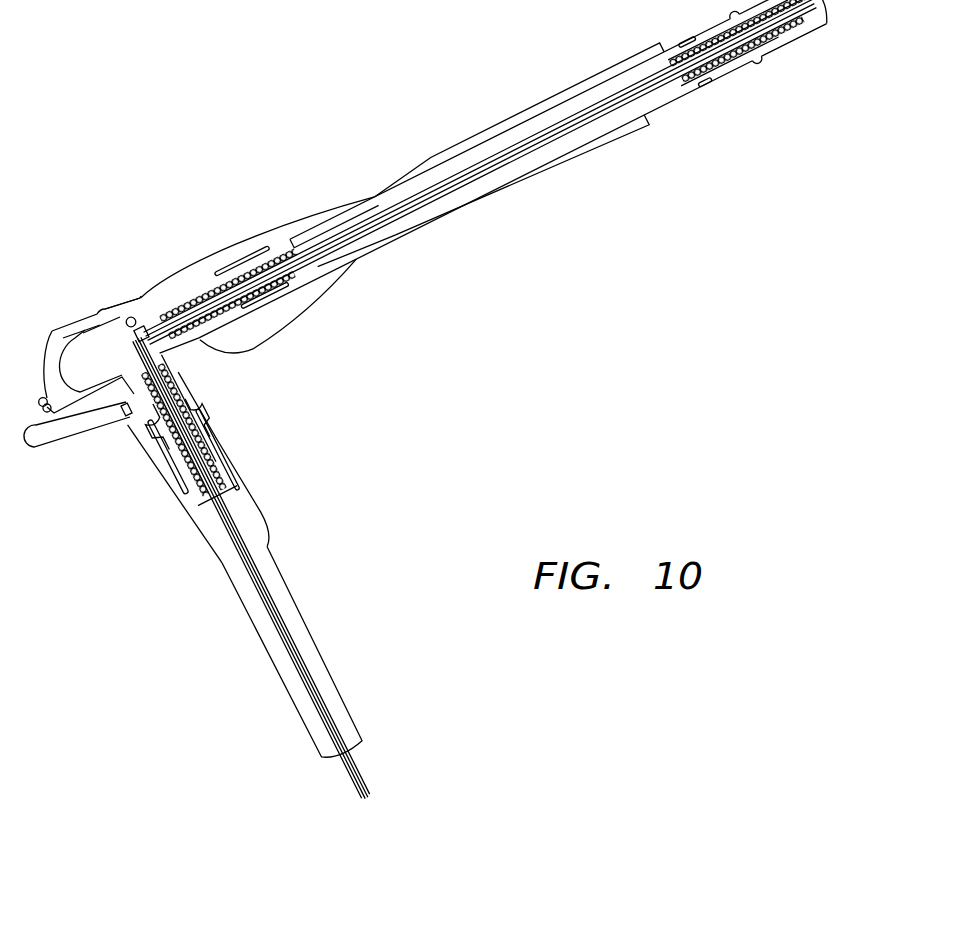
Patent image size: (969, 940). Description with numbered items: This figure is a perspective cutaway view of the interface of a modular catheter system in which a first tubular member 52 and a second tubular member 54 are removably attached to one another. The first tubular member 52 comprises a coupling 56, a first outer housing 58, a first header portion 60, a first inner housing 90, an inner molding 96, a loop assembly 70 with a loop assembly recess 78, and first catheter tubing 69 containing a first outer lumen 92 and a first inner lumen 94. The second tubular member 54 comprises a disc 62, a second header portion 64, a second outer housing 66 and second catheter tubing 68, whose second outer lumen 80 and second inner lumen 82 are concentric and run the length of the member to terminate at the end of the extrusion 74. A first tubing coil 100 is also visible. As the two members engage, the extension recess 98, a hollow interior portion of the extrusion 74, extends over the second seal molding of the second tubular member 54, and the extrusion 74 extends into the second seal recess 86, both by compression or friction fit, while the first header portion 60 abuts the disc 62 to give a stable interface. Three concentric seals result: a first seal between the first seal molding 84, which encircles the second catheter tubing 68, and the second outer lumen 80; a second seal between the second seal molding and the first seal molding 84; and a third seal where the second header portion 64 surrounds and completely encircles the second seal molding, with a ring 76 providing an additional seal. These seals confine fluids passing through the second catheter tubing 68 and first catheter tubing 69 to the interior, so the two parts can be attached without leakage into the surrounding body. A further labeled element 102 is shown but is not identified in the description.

The first tubular member 52 is at (397, 63).
The second tubular member 54 is at (216, 692).
The coupling 56 is at (790, 54).
The first outer housing 58 is at (684, 112).
The first header portion 60 is at (291, 232).
The disc 62 is at (31, 450).
The second header portion 64 is at (263, 517).
The second outer housing 66 is at (323, 660).
The second catheter tubing 68 is at (368, 782).
The first catheter tubing 69 is at (522, 158).
The loop assembly 70 is at (46, 398).
The extrusion 74 is at (84, 338).
The ring 76 is at (124, 415).
The loop assembly recess 78 is at (120, 303).
The second outer lumen 80 is at (180, 340).
The second inner lumen 82 is at (200, 365).
The first seal molding 84 is at (236, 452).
The second seal recess 86 is at (212, 405).
The first inner housing 90 is at (614, 88).
The first outer lumen 92 is at (160, 312).
The first inner lumen 94 is at (182, 307).
The inner molding 96 is at (248, 256).
The extension recess 98 is at (152, 430).
The first tubing coil 100 is at (207, 495).
The slot 102 is at (290, 282).